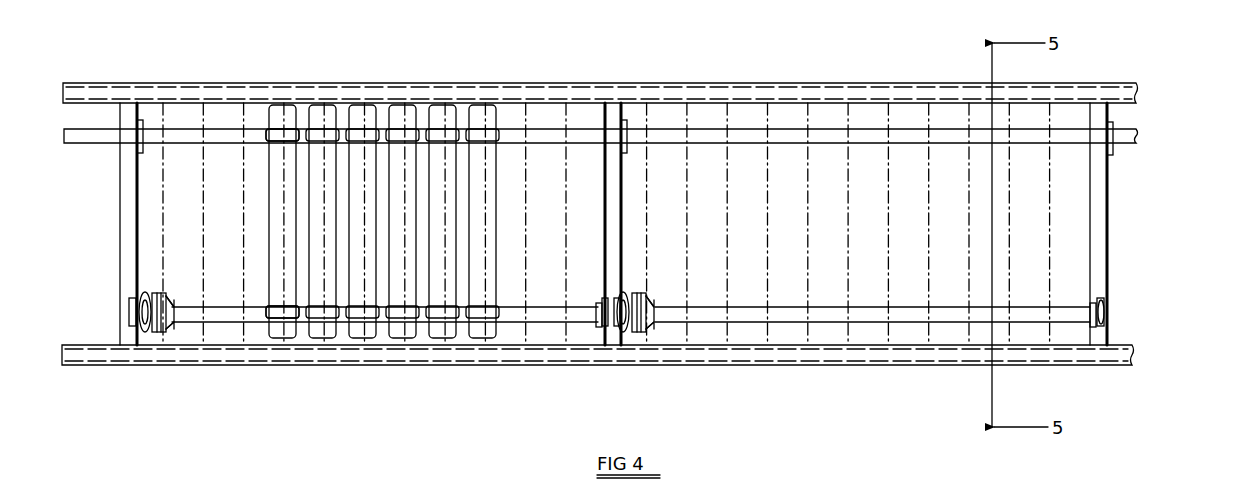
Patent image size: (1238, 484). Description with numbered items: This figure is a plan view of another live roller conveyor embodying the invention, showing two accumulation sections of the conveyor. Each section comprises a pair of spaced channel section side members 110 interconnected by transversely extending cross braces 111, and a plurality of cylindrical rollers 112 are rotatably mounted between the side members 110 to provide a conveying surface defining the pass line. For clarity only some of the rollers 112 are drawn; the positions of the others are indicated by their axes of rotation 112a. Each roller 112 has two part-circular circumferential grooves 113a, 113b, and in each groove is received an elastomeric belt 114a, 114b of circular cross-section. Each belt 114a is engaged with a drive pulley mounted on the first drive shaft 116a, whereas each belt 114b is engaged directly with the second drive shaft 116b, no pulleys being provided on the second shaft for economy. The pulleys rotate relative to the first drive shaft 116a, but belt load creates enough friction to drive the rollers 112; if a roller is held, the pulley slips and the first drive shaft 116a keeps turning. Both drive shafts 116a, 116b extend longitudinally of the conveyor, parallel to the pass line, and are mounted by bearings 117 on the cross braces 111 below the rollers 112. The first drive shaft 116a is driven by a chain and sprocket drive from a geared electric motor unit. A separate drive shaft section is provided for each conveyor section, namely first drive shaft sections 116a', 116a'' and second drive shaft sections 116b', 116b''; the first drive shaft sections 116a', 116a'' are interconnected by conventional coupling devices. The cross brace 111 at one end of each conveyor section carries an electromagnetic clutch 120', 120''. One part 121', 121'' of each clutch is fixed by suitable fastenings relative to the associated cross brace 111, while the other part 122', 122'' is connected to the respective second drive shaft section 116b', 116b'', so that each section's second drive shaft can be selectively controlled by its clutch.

The channel section side member 110 is at (1110, 83).
The cross brace 111 is at (120, 200).
The cylindrical roller 112 is at (477, 340).
The roller axis of rotation 112a is at (905, 366).
The first circumferential groove 113a is at (272, 130).
The second circumferential groove 113b is at (290, 340).
The first elastomeric belt 114a is at (291, 132).
The second elastomeric belt 114b is at (292, 322).
The first drive shaft 116a is at (642, 135).
The first drive shaft section 116a' is at (500, 90).
The first drive shaft section 116a'' is at (850, 88).
The second drive shaft 116b is at (683, 312).
The second drive shaft section 116b' is at (432, 358).
The second drive shaft section 116b'' is at (800, 371).
The bearing 117 is at (138, 340).
The electromagnetic clutch 120' is at (180, 286).
The electromagnetic clutch 120'' is at (667, 285).
The fixed clutch part 121' is at (108, 283).
The fixed clutch part 121'' is at (652, 274).
The rotating clutch part 122' is at (201, 344).
The rotating clutch part 122'' is at (677, 345).